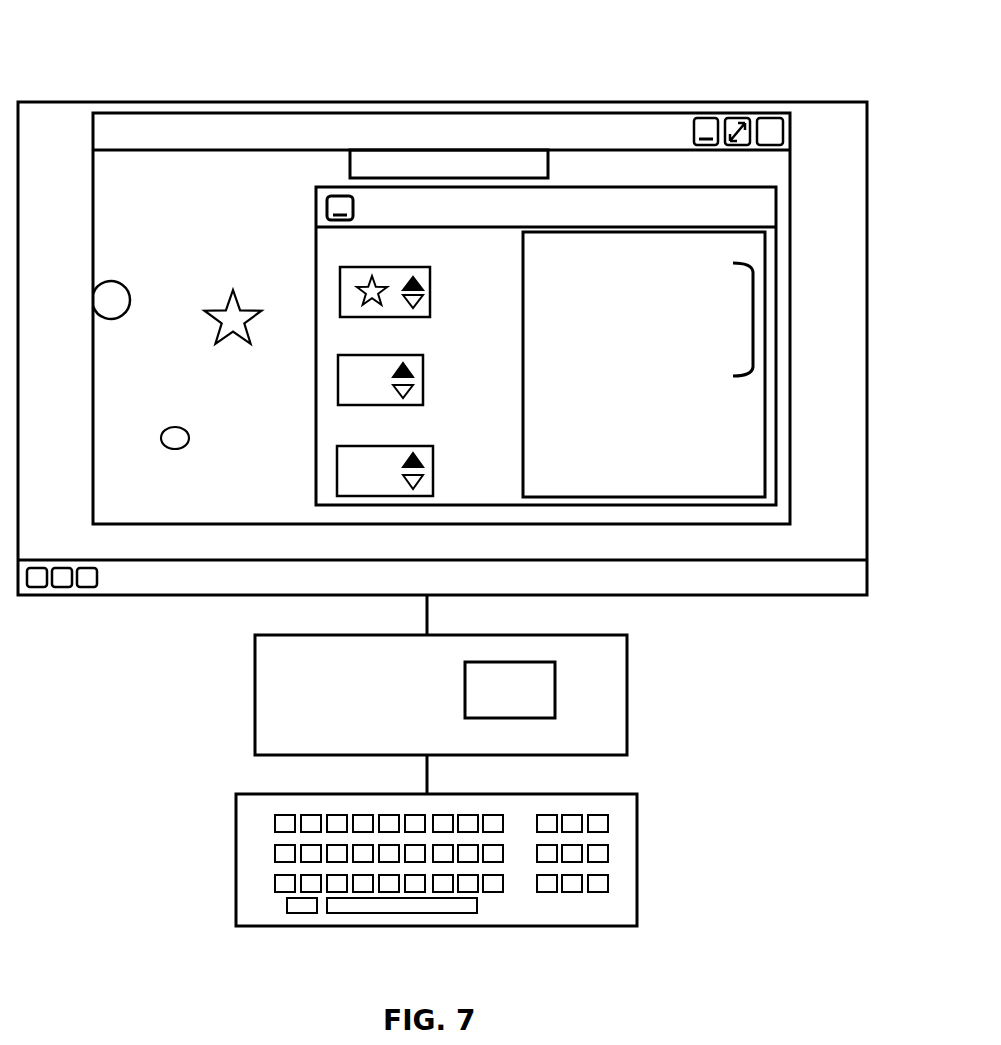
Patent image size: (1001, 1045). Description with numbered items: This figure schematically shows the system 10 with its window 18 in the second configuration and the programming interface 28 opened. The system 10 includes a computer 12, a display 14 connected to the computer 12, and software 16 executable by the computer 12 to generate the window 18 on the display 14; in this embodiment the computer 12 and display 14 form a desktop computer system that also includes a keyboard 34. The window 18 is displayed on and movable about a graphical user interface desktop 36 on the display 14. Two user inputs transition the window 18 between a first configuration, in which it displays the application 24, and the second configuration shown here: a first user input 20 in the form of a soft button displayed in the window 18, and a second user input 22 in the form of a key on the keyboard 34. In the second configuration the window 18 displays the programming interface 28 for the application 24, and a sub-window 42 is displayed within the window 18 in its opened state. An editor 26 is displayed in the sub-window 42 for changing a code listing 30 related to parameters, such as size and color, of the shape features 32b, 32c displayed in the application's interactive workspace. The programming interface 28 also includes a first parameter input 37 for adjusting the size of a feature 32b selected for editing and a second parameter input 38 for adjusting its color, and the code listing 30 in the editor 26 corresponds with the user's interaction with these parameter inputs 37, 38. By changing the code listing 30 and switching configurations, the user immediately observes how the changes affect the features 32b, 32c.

The system 10 is at (86, 72).
The computer 12 is at (317, 688).
The display 14 is at (235, 102).
The software 16 is at (523, 702).
The window 18 is at (297, 127).
The first user input 20 is at (105, 293).
The second user input 22 is at (282, 905).
The application 24 is at (124, 186).
The editor 26 is at (766, 409).
The programming interface 28 is at (306, 201).
The code listing 30 is at (753, 320).
The feature 32b is at (243, 307).
The feature 32c is at (175, 427).
The keyboard 34 is at (620, 815).
The graphical user interface desktop 36 is at (72, 541).
The first parameter input 37 is at (423, 380).
The second parameter input 38 is at (433, 470).
The sub-window 42 is at (760, 207).